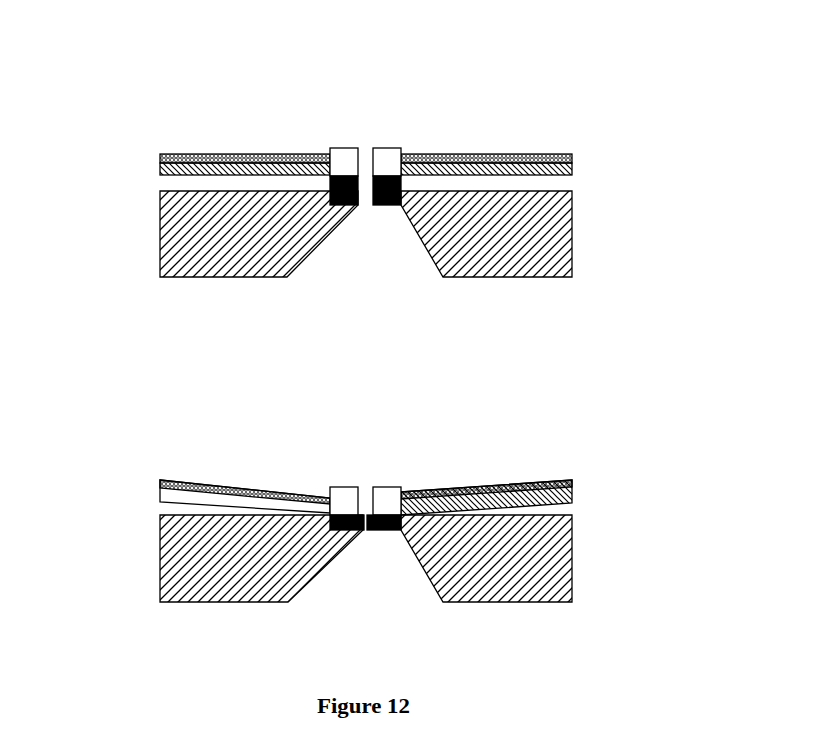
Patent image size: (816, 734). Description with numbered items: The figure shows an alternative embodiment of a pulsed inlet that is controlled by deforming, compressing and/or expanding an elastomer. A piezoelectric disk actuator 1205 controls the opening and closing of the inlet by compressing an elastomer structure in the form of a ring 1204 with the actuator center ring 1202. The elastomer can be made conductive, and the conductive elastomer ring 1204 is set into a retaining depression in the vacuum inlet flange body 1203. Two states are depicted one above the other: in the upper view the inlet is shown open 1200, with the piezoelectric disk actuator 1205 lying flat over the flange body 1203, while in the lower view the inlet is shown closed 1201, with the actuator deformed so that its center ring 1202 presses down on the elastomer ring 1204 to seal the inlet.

The inlet shown open 1200 is at (370, 214).
The inlet shown closed 1201 is at (426, 541).
The actuator center ring 1202 is at (390, 147).
The vacuum inlet flange body 1203 is at (160, 277).
The elastomer structure (ring) 1204 is at (367, 191).
The piezoelectric disk actuator 1205 is at (245, 155).